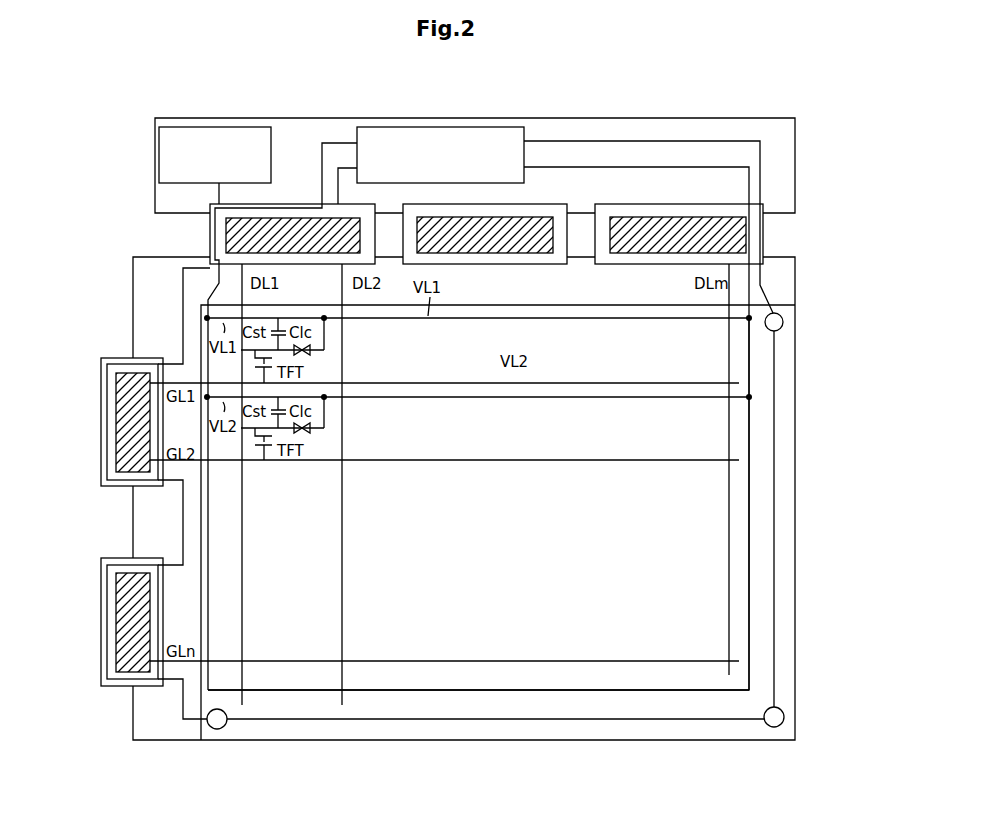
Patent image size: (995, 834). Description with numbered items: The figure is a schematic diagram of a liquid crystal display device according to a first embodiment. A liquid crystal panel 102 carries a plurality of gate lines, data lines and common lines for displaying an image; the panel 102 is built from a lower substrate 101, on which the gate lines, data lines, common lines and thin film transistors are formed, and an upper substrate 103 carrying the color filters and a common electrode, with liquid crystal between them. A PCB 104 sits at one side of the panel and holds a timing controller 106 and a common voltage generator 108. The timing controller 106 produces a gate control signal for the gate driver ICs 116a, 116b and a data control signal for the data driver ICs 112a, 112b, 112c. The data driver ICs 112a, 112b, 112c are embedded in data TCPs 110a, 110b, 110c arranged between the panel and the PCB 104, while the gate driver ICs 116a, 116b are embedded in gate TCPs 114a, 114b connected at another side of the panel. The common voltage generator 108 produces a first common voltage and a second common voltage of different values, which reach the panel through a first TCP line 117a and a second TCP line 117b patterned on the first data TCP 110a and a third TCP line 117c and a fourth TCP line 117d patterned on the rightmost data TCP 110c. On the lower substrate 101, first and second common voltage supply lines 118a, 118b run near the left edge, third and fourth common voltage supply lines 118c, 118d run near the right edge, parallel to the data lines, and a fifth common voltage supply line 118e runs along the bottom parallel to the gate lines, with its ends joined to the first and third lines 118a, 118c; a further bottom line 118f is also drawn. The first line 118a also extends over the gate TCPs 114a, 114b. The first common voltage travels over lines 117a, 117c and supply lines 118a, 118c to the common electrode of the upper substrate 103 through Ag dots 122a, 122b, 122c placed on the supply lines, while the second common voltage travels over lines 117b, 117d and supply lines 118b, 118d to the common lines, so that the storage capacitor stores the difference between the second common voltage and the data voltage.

The lower substrate 101 is at (132, 307).
The liquid crystal panel 102 is at (812, 443).
The upper substrate 103 is at (200, 342).
The PCB 104 is at (795, 167).
The timing controller 106 is at (232, 127).
The common voltage generator 108 is at (408, 127).
The first data TCP 110a is at (210, 236).
The data TCP 110b is at (540, 205).
The third data TCP 110c is at (765, 233).
The data driver IC 112a is at (325, 253).
The data driver IC 112b is at (515, 253).
The data driver IC 112c is at (655, 253).
The gate TCP 114a is at (102, 413).
The gate TCP 114b is at (102, 613).
The gate driver IC 116a is at (117, 447).
The gate driver IC 116b is at (117, 647).
The first TCP line 117a is at (333, 142).
The second TCP line 117b is at (343, 168).
The third TCP line 117c is at (714, 141).
The fourth TCP line 117d is at (628, 167).
The first common voltage supply line 118a is at (183, 278).
The second common voltage supply line 118b is at (184, 513).
The third common voltage supply line 118c is at (777, 600).
The fourth common voltage supply line 118d is at (752, 548).
The fifth common voltage supply line 118e is at (462, 692).
The common electrode line 118f is at (300, 722).
The Ag dot 122a is at (217, 729).
The Ag dot 122b is at (774, 727).
The Ag dot 122c is at (784, 318).